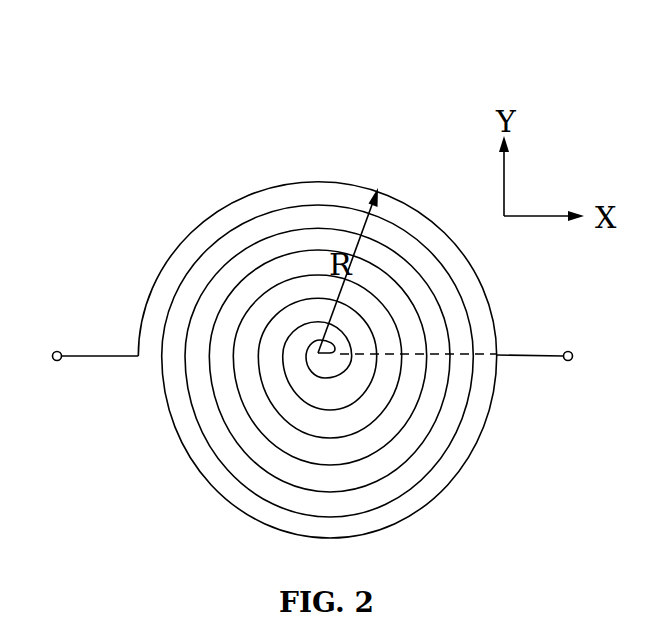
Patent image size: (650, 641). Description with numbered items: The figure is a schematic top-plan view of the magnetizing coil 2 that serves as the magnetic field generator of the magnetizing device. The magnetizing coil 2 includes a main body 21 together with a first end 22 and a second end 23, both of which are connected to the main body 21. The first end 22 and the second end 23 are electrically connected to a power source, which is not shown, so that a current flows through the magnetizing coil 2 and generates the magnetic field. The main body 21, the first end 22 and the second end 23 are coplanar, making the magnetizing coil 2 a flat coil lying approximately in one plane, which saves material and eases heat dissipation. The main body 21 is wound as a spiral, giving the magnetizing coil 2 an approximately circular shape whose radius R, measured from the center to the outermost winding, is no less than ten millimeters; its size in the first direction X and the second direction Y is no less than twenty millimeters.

The magnetizing coil 2 is at (309, 99).
The main body 21 is at (218, 273).
The first end 22 is at (147, 304).
The second end 23 is at (313, 343).